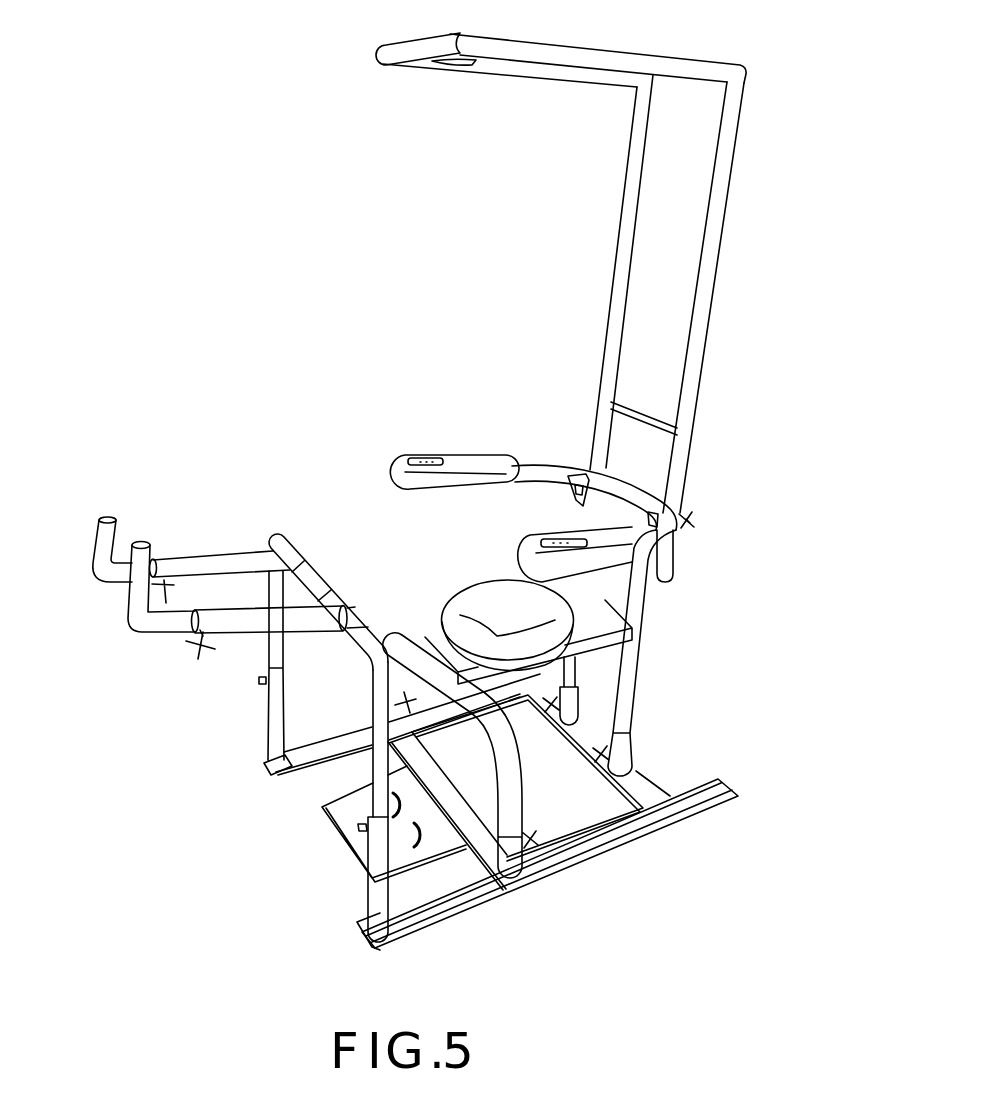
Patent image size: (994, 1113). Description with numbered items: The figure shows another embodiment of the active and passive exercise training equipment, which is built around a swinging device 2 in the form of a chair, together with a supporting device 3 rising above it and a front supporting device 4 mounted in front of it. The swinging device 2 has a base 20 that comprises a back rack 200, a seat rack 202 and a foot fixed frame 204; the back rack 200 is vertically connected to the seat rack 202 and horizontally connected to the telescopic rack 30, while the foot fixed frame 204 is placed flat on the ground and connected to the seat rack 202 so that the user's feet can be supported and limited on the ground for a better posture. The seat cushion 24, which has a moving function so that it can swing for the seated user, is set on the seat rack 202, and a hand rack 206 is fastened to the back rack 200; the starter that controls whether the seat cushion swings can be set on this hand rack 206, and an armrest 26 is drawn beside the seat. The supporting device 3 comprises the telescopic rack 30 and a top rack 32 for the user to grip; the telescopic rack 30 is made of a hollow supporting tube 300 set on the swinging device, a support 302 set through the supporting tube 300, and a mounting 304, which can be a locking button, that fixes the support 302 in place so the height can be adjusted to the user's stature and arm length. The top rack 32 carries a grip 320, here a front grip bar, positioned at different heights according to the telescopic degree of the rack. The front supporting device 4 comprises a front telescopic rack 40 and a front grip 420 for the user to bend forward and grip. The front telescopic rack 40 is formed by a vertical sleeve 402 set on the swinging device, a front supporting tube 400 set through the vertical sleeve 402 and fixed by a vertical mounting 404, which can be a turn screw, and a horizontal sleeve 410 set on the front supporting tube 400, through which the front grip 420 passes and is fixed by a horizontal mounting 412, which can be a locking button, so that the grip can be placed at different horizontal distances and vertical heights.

The swinging device 2 is at (500, 540).
The base 20 is at (402, 641).
The seat cushion 24 is at (472, 597).
The armrest 26 is at (400, 462).
The back rack 200 is at (643, 601).
The seat rack 202 is at (520, 770).
The foot fixed frame 204 is at (413, 853).
The hand rack 206 is at (550, 466).
The supporting device 3 is at (674, 39).
The telescopic rack 30 is at (707, 270).
The top rack 32 is at (392, 58).
The supporting tube 300 is at (663, 572).
The support 302 is at (618, 283).
The mounting 304 is at (694, 516).
The grip 320 is at (461, 63).
The front supporting device 4 is at (245, 520).
The front telescopic rack 40 is at (296, 552).
The front supporting tube 400 is at (383, 711).
The vertical sleeve 402 is at (378, 890).
The vertical mounting 404 is at (367, 828).
The horizontal sleeve 410 is at (214, 565).
The horizontal mounting 412 is at (207, 660).
The front grip 420 is at (100, 550).